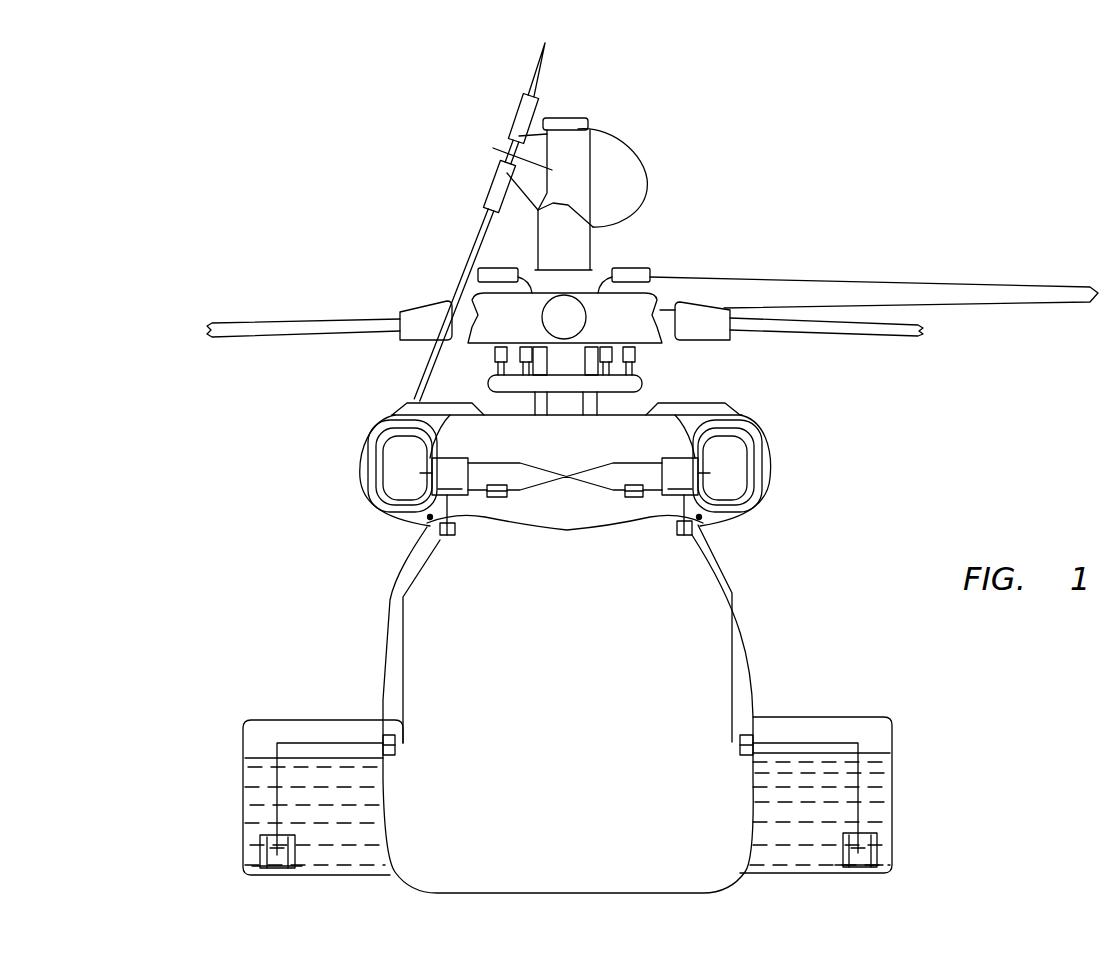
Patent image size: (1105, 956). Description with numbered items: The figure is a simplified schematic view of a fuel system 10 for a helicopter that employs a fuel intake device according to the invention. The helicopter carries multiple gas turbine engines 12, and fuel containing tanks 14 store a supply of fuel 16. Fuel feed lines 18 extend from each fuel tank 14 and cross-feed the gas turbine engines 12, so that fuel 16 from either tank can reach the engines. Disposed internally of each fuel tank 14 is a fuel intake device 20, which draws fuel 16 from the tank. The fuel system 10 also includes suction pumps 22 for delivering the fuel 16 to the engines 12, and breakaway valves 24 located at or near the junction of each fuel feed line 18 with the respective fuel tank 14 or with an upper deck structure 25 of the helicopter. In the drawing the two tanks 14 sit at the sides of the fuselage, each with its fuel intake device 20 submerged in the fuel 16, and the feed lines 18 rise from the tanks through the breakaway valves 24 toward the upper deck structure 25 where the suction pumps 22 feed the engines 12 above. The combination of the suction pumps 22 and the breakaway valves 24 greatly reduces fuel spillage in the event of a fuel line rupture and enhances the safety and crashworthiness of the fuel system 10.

The fuel system 10 is at (808, 738).
The gas turbine engines 12 is at (392, 452).
The fuel containing tanks 14 is at (241, 735).
The fuel 16 is at (256, 780).
The fuel feed lines 18 is at (425, 580).
The fuel intake device 20 is at (258, 840).
The suction pumps 22 is at (565, 476).
The breakaway valves 24 is at (459, 533).
The upper deck structure 25 is at (427, 518).